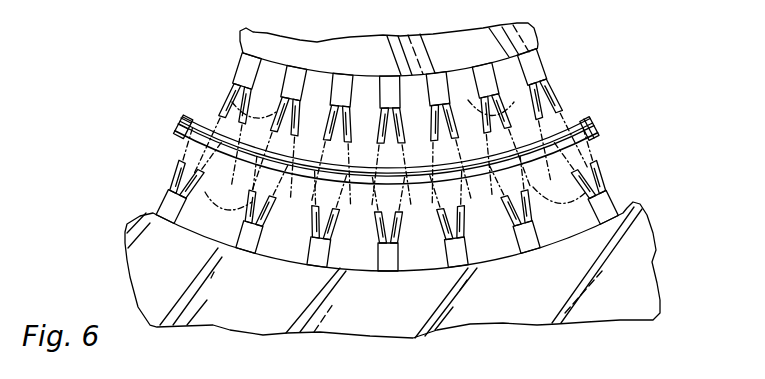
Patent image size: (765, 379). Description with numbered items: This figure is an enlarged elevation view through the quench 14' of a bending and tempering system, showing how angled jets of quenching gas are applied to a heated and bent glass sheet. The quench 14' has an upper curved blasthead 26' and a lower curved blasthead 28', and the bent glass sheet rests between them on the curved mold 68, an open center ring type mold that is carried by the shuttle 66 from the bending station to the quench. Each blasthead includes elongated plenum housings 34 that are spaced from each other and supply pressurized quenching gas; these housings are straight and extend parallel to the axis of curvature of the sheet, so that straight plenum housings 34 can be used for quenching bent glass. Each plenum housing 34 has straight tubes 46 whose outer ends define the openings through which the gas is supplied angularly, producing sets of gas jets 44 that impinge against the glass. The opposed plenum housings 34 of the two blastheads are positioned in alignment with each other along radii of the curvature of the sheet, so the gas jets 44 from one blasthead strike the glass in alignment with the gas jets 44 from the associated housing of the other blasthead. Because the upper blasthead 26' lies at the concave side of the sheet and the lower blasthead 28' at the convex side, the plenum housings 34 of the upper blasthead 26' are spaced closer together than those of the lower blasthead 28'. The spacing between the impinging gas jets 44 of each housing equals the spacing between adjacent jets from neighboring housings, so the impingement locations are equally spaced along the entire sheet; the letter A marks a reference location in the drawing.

The quench 14' is at (418, 169).
The upper curved blasthead 26' is at (419, 41).
The lower curved blasthead 28' is at (426, 270).
The plenum housing 34 is at (240, 58).
The gas jet 44 is at (240, 100).
The straight tube 46 is at (229, 96).
The shuttle 66 is at (601, 128).
The curved mold 68 is at (182, 121).
The axis A is at (268, 57).